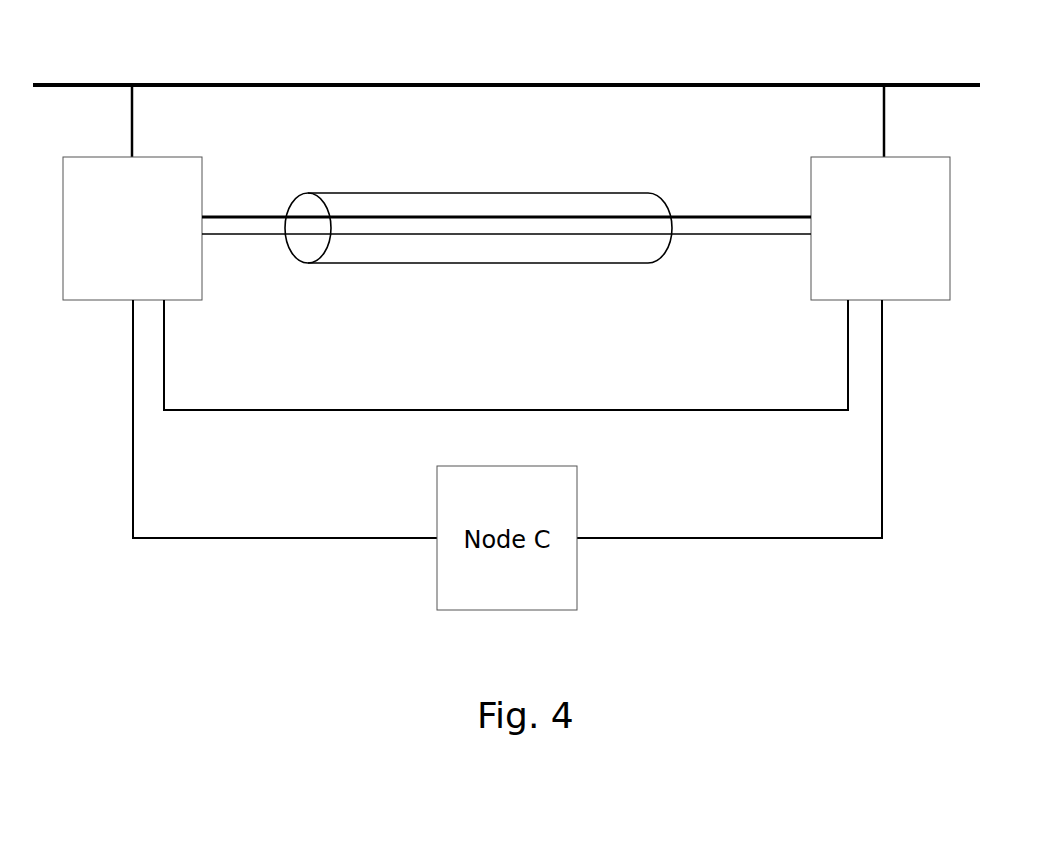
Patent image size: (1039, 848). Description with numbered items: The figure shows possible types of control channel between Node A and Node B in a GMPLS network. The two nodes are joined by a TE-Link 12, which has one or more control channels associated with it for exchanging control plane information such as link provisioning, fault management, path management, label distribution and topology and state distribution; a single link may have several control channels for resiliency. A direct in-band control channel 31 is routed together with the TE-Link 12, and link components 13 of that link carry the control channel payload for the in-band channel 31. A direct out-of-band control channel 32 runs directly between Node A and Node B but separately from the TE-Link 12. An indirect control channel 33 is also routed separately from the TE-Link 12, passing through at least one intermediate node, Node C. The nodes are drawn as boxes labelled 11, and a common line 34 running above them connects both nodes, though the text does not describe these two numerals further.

The network node (Node A / Node B) 11 is at (63, 200).
The TE-Link 12 is at (545, 191).
The link components 13 is at (727, 213).
The direct in-band control channel 31 is at (704, 238).
The direct out-of-band control channel 32 is at (613, 407).
The indirect control channel 33 is at (698, 536).
The shared bus / common line 34 is at (600, 80).